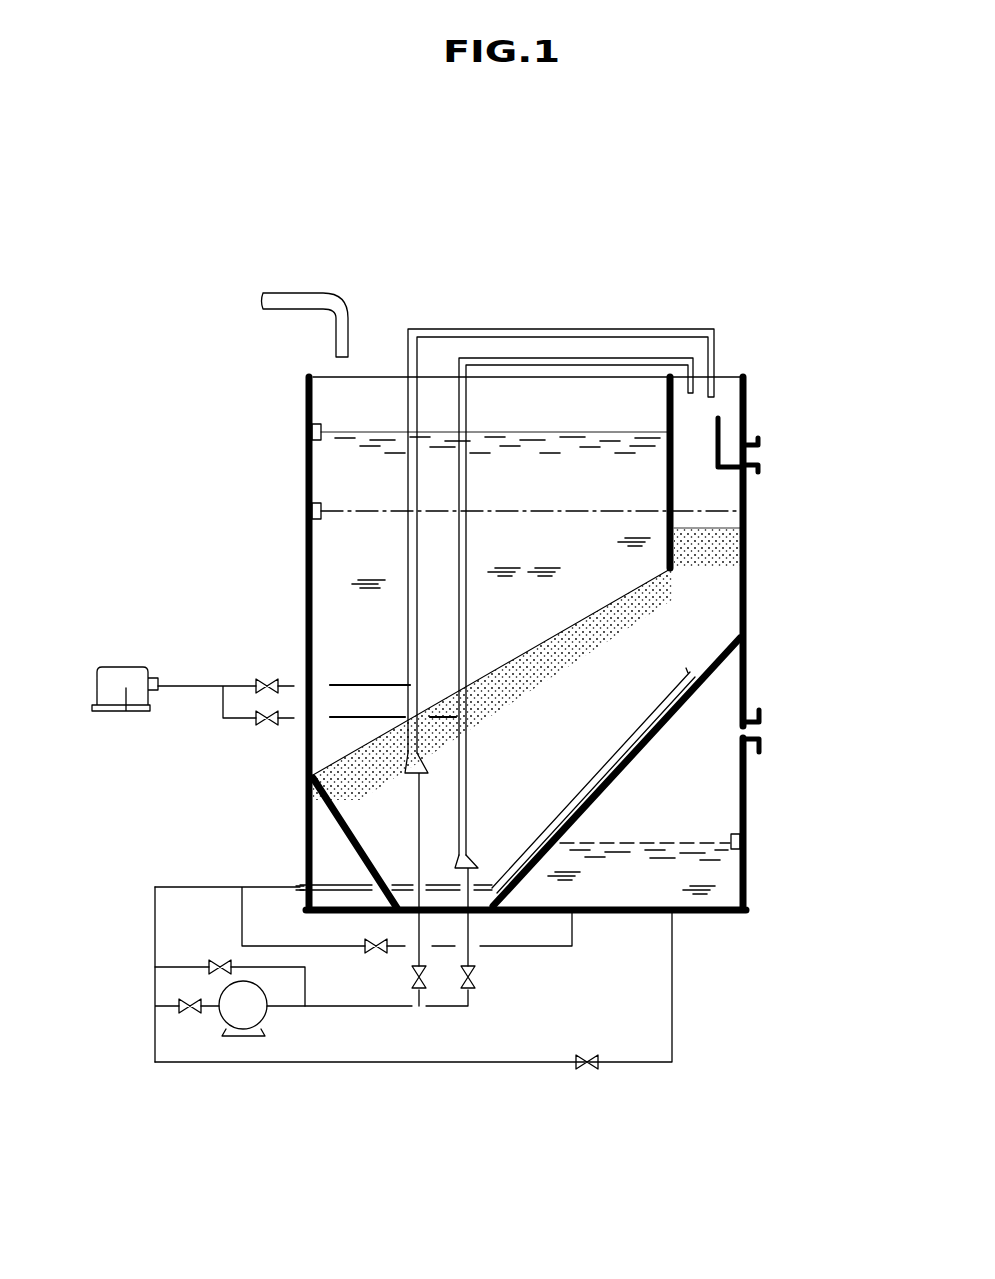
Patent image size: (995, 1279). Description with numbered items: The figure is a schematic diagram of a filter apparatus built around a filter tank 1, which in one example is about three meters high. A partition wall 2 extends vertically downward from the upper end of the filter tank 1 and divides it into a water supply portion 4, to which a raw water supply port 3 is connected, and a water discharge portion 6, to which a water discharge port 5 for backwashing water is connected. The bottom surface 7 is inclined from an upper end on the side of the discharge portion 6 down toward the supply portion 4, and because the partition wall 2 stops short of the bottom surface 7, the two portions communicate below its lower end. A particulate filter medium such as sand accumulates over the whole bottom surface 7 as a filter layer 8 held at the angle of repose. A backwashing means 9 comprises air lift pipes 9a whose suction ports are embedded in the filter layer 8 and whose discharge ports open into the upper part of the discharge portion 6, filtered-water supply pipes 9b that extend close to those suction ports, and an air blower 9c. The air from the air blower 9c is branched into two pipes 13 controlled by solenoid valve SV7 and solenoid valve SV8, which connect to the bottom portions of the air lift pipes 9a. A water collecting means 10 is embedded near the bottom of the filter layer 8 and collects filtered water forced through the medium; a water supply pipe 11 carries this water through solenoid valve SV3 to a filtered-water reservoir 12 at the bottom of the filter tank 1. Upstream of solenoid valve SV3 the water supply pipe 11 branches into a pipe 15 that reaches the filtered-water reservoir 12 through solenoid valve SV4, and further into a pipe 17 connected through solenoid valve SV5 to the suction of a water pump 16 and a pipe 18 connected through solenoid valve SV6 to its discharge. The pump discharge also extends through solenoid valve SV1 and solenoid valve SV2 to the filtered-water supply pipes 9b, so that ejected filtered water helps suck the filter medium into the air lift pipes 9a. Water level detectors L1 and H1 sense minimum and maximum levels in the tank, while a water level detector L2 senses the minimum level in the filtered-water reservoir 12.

The filter tank 1 is at (762, 538).
The partition wall 2 is at (674, 412).
The raw water supply port 3 is at (346, 376).
The water supply portion 4 is at (550, 400).
The water discharge port 5 is at (760, 456).
The water discharge portion 6 is at (726, 388).
The bottom surface 7 is at (716, 655).
The filter layer 8 is at (666, 630).
The backwashing means 9 is at (275, 852).
The air lift pipe 9a is at (458, 810).
The filtered-water supply pipe 9b is at (463, 878).
The air blower 9c is at (126, 712).
The water collecting means 10 is at (656, 705).
The water supply pipe 11 is at (574, 928).
The filtered-water reservoir 12 is at (726, 770).
The air pipe 13 is at (350, 716).
The pipe 15 is at (674, 1011).
The water pump 16 is at (242, 1016).
The pipe 17 is at (165, 1012).
The pipe 18 is at (183, 966).
The water level detector H1 is at (312, 432).
The water level detector L1 is at (312, 511).
The water level detector L2 is at (734, 840).
The solenoid valve SV1 is at (421, 997).
The solenoid valve SV2 is at (478, 980).
The solenoid valve SV3 is at (376, 955).
The solenoid valve SV4 is at (586, 1070).
The solenoid valve SV5 is at (183, 1002).
The solenoid valve SV6 is at (213, 960).
The solenoid valve SV7 is at (262, 678).
The solenoid valve SV8 is at (260, 727).